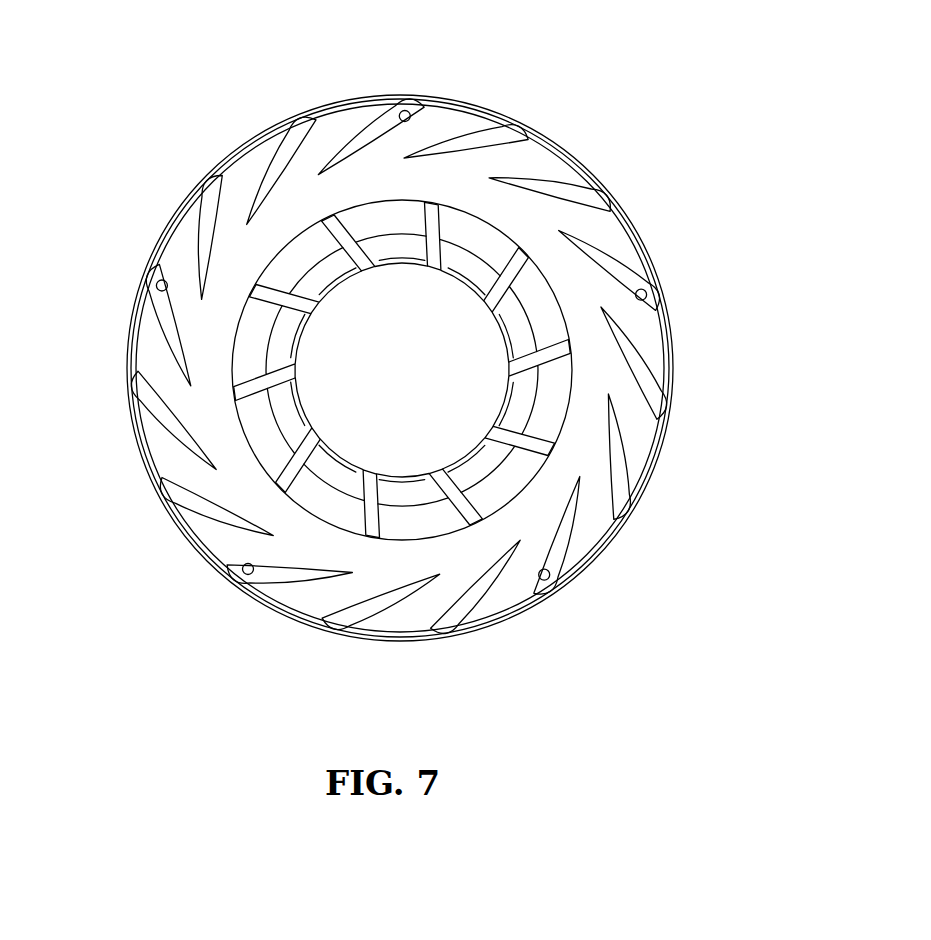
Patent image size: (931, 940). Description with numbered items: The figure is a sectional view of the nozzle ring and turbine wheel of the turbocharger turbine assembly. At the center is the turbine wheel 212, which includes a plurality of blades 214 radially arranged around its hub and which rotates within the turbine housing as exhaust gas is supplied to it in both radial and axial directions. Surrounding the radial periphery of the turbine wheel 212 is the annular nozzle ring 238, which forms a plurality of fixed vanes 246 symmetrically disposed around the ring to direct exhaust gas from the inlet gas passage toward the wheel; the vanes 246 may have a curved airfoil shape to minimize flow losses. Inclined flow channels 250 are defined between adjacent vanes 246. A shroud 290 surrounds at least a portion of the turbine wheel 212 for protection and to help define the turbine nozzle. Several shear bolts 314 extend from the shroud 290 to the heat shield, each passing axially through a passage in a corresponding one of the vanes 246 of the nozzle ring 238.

The turbine wheel 212 is at (428, 302).
The blades 214 is at (530, 448).
The nozzle ring 238 is at (209, 555).
The fixed vanes 246 is at (620, 276).
The flow channels 250 is at (638, 327).
The shroud 290 is at (377, 566).
The shear bolts 314 is at (406, 110).